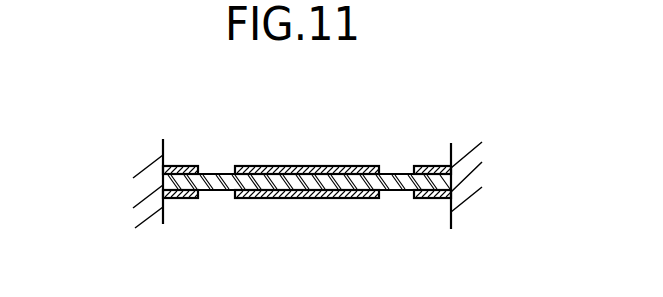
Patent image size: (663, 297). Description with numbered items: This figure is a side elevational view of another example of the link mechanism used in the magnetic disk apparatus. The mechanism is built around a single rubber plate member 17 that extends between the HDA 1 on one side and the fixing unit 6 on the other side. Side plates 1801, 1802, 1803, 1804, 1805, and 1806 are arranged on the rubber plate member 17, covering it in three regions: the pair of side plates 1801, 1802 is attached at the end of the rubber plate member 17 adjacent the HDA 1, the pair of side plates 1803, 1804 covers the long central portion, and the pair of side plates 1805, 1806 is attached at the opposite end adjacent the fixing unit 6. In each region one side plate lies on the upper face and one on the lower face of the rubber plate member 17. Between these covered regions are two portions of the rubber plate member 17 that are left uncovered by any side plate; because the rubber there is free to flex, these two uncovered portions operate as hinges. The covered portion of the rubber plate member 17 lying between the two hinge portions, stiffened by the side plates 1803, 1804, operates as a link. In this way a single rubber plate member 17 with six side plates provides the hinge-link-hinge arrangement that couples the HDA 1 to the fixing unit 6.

The HDA 1 is at (140, 185).
The fixing unit 6 is at (472, 176).
The rubber plate member 17 is at (215, 168).
The side plate 1801 is at (177, 198).
The side plate 1802 is at (178, 160).
The side plate 1803 is at (297, 198).
The side plate 1804 is at (298, 165).
The side plate 1805 is at (437, 198).
The side plate 1806 is at (433, 163).